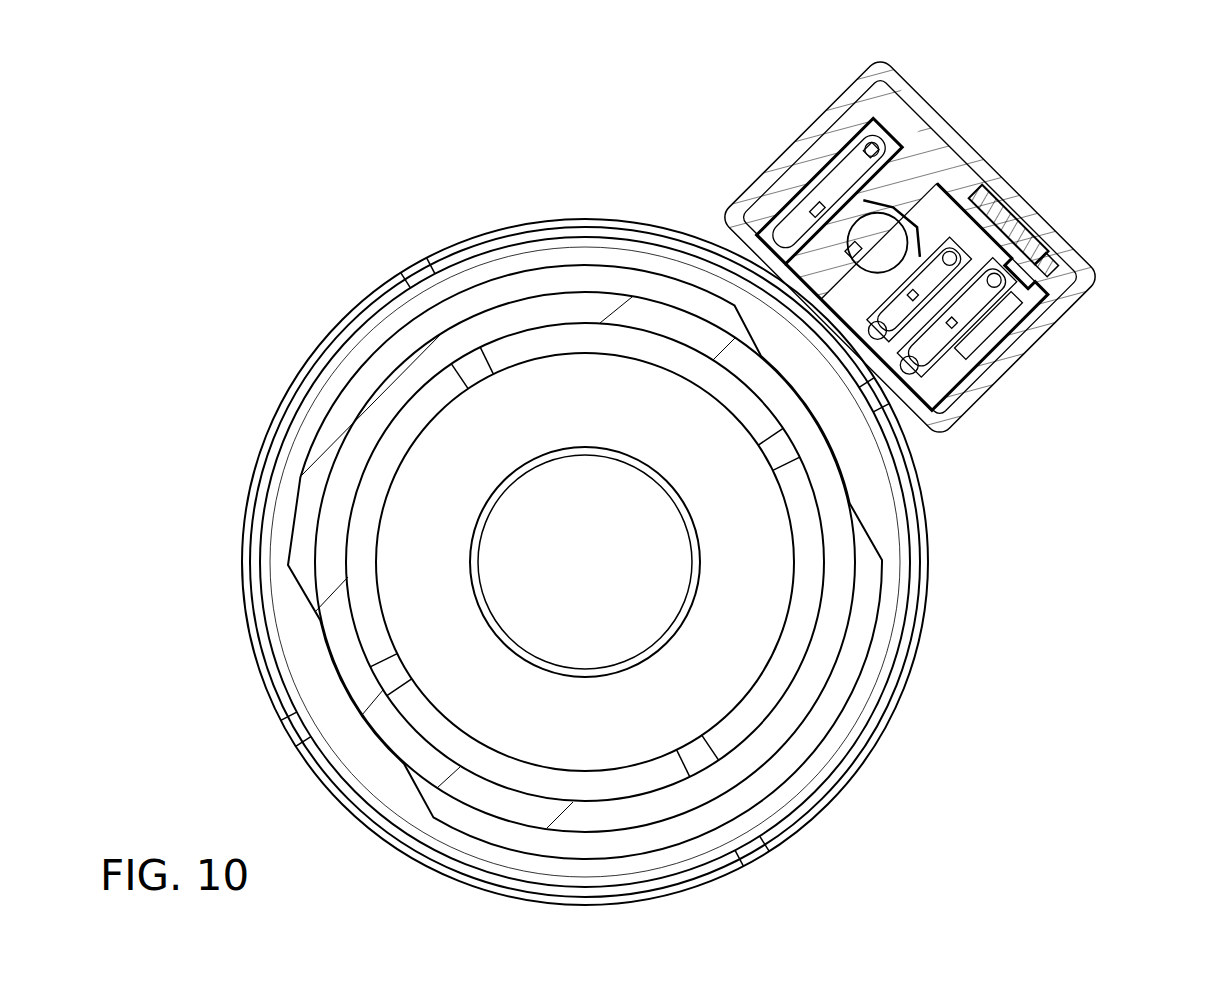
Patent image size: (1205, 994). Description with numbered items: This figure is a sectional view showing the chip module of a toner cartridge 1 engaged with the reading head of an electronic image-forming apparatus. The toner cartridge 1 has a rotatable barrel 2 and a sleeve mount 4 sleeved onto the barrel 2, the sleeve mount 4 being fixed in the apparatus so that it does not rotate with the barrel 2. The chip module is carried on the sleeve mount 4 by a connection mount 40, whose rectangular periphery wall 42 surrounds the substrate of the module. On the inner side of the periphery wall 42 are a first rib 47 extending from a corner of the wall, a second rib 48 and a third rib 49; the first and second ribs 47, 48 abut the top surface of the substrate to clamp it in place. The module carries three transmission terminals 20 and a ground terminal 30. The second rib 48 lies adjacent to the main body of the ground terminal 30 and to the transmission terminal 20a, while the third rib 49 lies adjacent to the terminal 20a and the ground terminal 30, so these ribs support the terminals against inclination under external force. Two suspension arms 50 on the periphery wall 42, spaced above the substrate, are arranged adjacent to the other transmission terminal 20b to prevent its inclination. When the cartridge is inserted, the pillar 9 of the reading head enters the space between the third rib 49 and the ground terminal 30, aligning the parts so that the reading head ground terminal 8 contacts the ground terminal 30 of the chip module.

The toner cartridge 1 is at (322, 242).
The barrel 2 is at (388, 278).
The sleeve mount 4 is at (893, 76).
The ground terminal 8 is at (853, 272).
The pillar 9 is at (970, 340).
The transmission terminals 20 is at (1023, 277).
The transmission terminal 20a is at (840, 178).
The transmission terminal 20b is at (997, 303).
The ground terminal 30 is at (955, 192).
The connection mount 40 is at (1056, 342).
The periphery wall 42 is at (808, 165).
The first rib 47 is at (1035, 262).
The second rib 48 is at (925, 162).
The third rib 49 is at (818, 238).
The suspension arms 50 is at (982, 296).